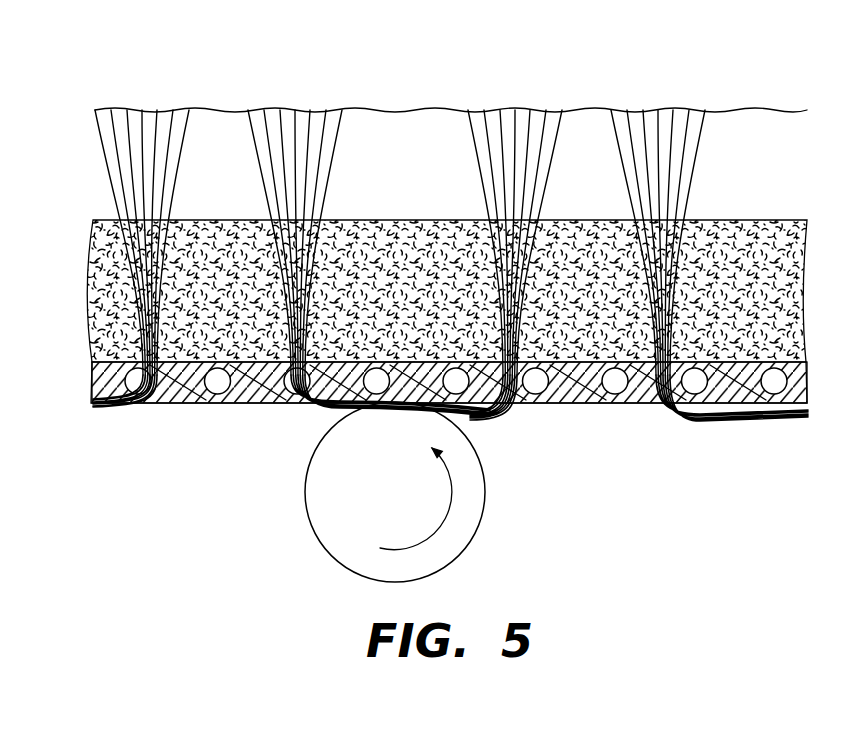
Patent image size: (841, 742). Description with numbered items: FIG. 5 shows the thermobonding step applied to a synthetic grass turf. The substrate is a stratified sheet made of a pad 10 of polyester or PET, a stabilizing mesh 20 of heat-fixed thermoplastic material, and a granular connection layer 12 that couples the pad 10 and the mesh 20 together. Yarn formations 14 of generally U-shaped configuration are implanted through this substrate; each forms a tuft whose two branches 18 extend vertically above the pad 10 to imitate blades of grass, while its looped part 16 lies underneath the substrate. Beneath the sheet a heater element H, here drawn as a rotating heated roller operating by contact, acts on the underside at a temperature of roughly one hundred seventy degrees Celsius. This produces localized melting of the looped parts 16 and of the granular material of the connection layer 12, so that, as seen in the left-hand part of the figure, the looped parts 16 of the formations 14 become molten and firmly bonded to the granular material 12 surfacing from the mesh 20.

The pad 10 is at (102, 285).
The connection layer 12 is at (185, 401).
The yarn formations 14 is at (519, 426).
The looped part 16 is at (110, 404).
The branches 18 is at (118, 140).
The stabilizing mesh 20 is at (218, 394).
The heater element H is at (318, 516).